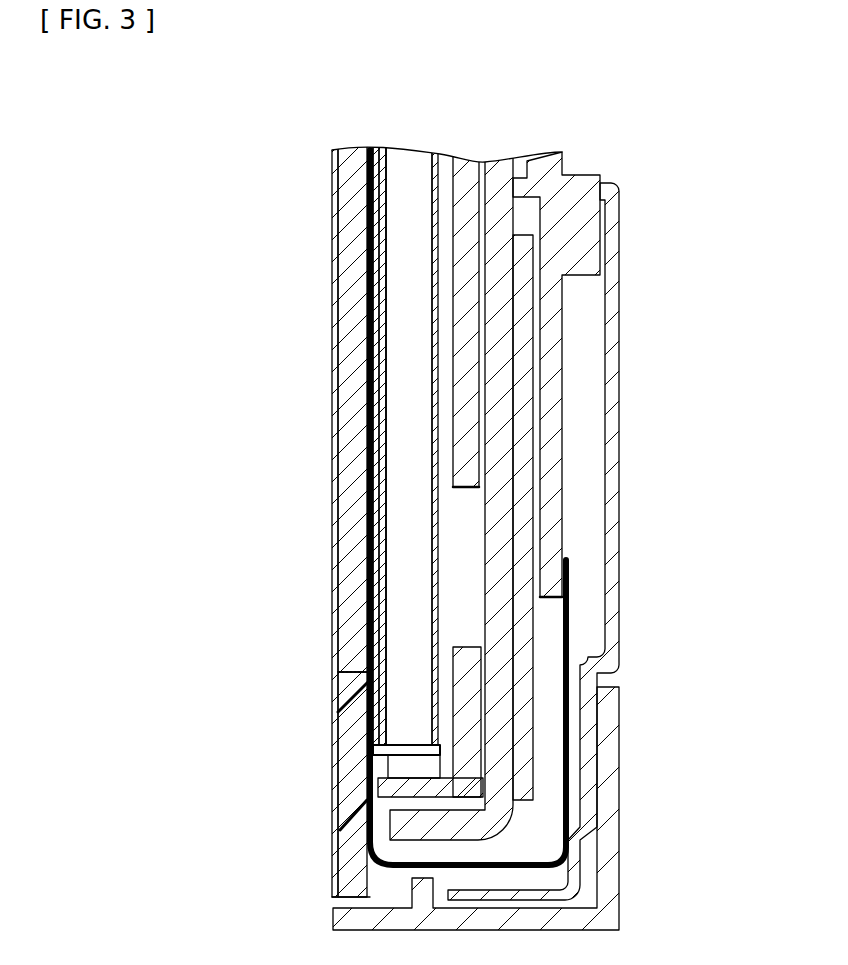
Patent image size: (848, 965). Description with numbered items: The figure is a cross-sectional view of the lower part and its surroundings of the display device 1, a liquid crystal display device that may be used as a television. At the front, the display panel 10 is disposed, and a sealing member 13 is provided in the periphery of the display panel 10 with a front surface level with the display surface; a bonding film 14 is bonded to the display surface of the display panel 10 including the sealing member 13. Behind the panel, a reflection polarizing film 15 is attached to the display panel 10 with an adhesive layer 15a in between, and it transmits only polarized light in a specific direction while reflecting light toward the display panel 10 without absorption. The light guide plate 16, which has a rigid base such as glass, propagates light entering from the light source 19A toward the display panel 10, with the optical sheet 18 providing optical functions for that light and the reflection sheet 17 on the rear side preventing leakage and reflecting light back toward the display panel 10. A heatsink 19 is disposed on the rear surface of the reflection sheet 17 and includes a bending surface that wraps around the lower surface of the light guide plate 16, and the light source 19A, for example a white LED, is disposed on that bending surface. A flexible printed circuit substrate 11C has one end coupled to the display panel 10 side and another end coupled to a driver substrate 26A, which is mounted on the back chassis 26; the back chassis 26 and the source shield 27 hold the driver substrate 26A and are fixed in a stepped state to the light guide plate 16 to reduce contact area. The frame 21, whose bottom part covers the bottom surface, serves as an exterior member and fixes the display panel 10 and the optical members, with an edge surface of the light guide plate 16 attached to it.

The display device 1 is at (500, 503).
The display panel 10 is at (348, 403).
The printed circuit substrate 11C is at (568, 568).
The sealing member 13 is at (345, 718).
The bonding film 14 is at (332, 345).
The reflection polarizing film 15 is at (367, 233).
The adhesive layer 15a is at (370, 283).
The light guide plate 16 is at (408, 158).
The reflection sheet 17 is at (437, 150).
The optical sheet 18 is at (375, 145).
The heatsink 19 is at (467, 660).
The light source 19A is at (418, 770).
The back chassis 26 is at (497, 170).
The driver substrate 26A is at (587, 245).
The source shield 27 is at (612, 450).
The frame 21 is at (613, 747).